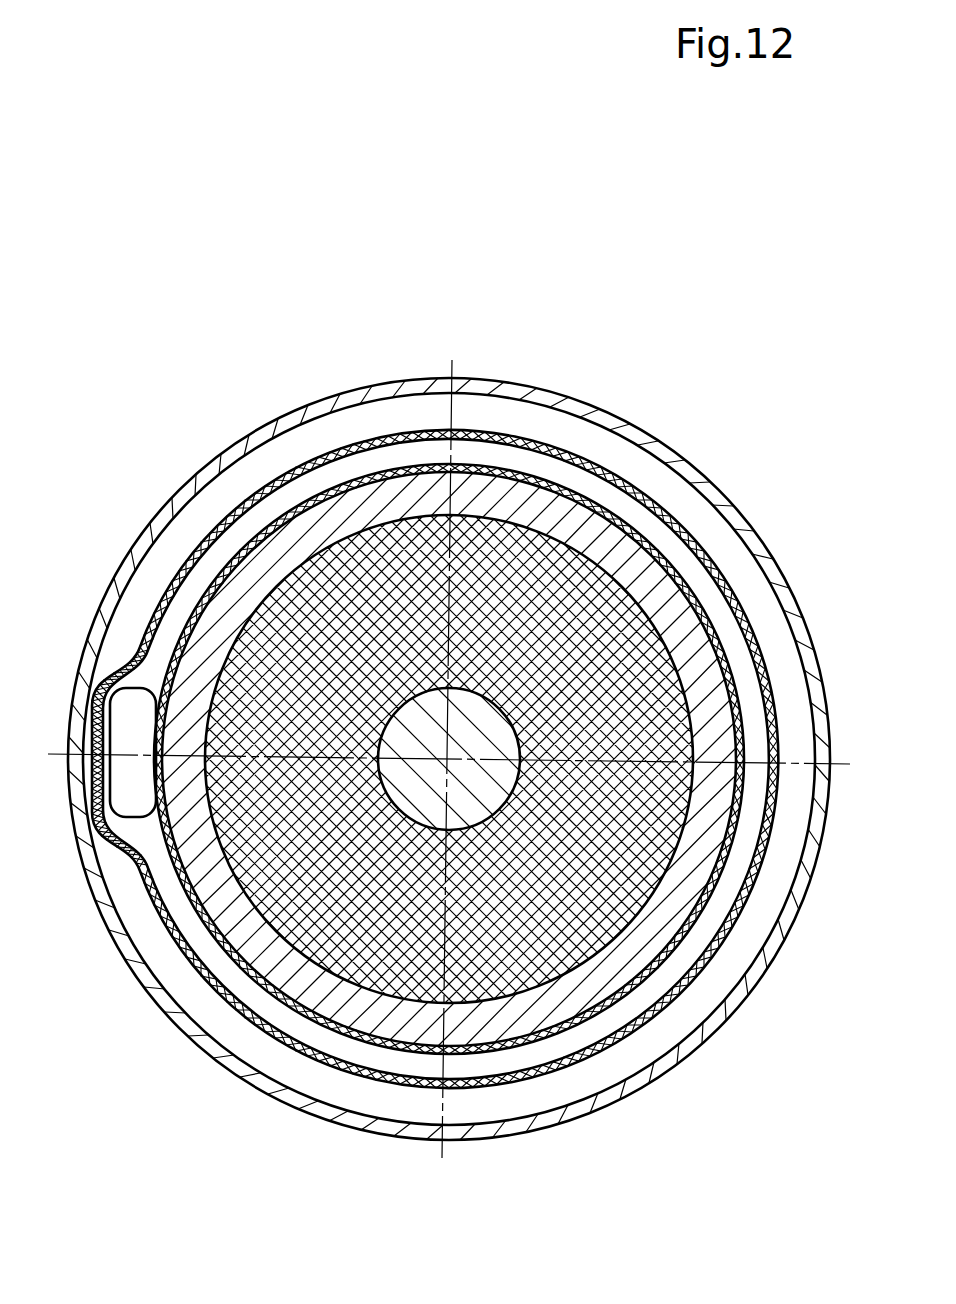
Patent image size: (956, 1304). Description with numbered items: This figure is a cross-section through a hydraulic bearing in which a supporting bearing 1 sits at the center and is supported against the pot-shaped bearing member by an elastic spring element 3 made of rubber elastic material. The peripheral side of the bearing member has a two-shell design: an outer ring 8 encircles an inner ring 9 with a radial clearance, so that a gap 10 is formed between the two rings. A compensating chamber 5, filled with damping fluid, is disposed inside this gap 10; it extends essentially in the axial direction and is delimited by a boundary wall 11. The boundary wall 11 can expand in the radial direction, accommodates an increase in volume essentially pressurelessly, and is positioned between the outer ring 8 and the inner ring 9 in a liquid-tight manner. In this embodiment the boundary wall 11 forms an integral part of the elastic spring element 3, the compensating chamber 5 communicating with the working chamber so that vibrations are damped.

The supporting bearing 1 is at (185, 1030).
The elastic spring element 3 is at (215, 672).
The compensating chamber 5 is at (177, 902).
The outer ring 8 is at (703, 488).
The inner ring 9 is at (665, 607).
The gap 10 is at (143, 585).
The boundary wall 11 is at (127, 843).